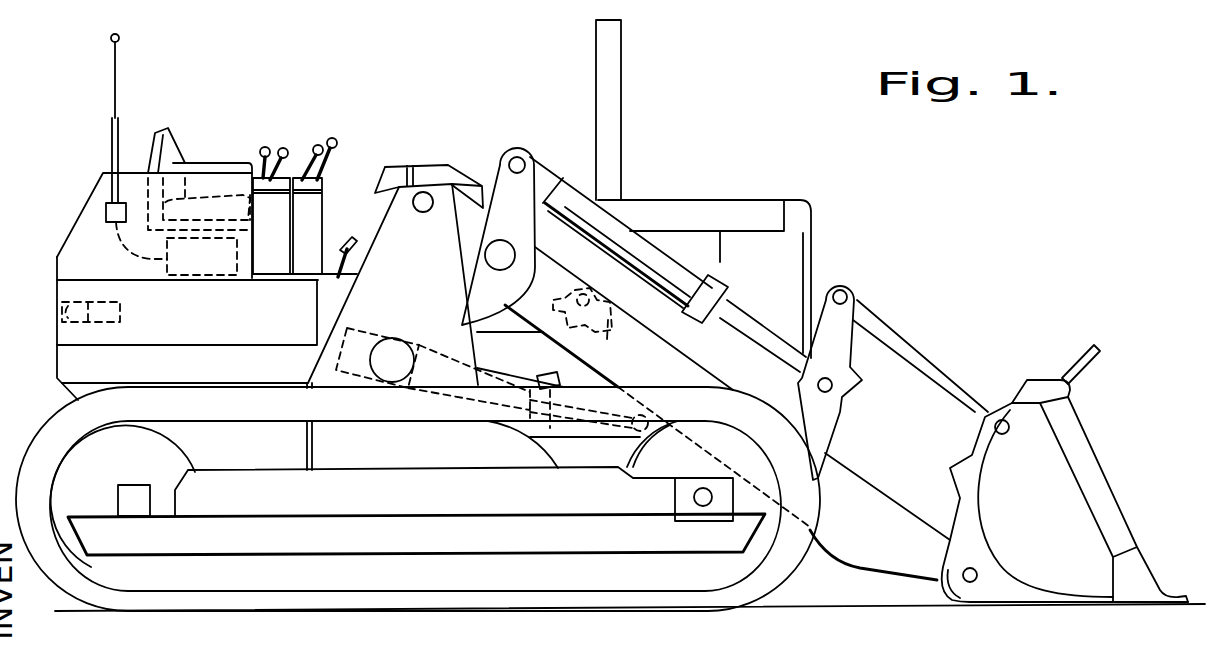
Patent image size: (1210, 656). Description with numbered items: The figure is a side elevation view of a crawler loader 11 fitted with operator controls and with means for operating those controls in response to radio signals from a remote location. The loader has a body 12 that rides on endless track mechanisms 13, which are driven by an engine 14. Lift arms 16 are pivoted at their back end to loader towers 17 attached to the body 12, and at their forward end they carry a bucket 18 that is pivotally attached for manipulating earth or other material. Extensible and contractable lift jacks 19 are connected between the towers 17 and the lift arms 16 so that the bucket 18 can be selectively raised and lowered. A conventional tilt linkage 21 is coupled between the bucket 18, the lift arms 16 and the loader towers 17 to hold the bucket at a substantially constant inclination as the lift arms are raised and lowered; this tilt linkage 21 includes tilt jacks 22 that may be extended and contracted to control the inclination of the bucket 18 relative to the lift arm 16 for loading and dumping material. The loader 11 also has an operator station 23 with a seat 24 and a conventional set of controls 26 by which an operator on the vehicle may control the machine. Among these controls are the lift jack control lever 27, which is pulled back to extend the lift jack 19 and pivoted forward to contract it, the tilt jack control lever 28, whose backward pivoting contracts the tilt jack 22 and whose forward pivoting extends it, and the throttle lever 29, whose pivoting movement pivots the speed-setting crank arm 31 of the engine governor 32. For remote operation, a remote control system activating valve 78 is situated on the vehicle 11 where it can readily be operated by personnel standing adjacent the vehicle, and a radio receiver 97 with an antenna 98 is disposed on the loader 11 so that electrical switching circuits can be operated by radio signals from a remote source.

The crawler loader 11 is at (710, 116).
The body 12 is at (228, 375).
The endless track mechanisms 13 is at (60, 420).
The engine 14 is at (705, 260).
The lift arms 16 is at (862, 521).
The loader towers 17 is at (425, 269).
The bucket 18 is at (1049, 514).
The lift jacks 19 is at (485, 373).
The tilt linkage 21 is at (869, 294).
The tilt jacks 22 is at (625, 235).
The operator station 23 is at (252, 90).
The seat 24 is at (161, 130).
The controls 26 is at (354, 148).
The lift jack control lever 27 is at (282, 147).
The tilt jack control lever 28 is at (259, 148).
The throttle lever 29 is at (313, 144).
The speed-setting crank arm 31 is at (577, 290).
The engine governor 32 is at (607, 340).
The remote control system activating valve 78 is at (58, 299).
The radio receiver 97 is at (160, 264).
The antenna 98 is at (112, 77).